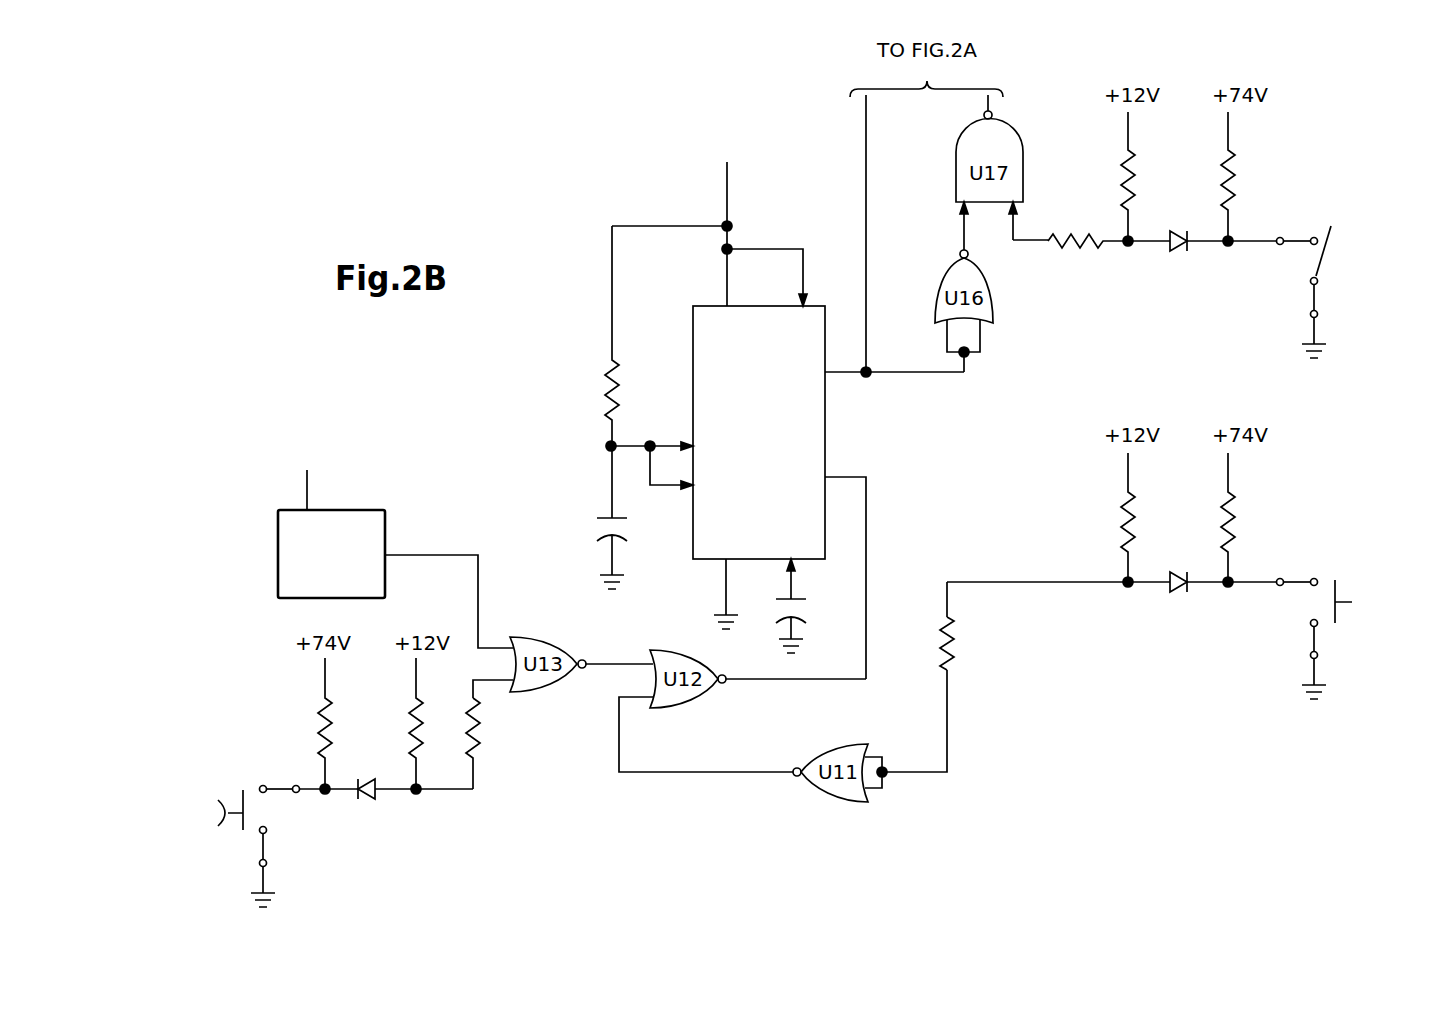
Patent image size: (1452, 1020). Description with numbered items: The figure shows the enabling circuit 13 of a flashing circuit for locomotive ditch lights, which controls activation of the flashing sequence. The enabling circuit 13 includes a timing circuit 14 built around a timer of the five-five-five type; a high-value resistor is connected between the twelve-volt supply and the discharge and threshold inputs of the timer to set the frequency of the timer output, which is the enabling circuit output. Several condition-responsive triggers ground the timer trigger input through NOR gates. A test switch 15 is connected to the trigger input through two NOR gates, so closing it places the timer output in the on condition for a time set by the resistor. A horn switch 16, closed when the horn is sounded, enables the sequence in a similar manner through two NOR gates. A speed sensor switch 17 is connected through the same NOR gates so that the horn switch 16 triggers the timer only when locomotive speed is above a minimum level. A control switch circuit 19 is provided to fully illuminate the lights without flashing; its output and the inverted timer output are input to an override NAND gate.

The enabling circuit 13 is at (600, 185).
The timing circuit 14 is at (588, 508).
The test switch 15 is at (1337, 560).
The horn switch 16 is at (233, 755).
The speed sensor switch 17 is at (348, 510).
The control switch circuit 19 is at (1333, 220).